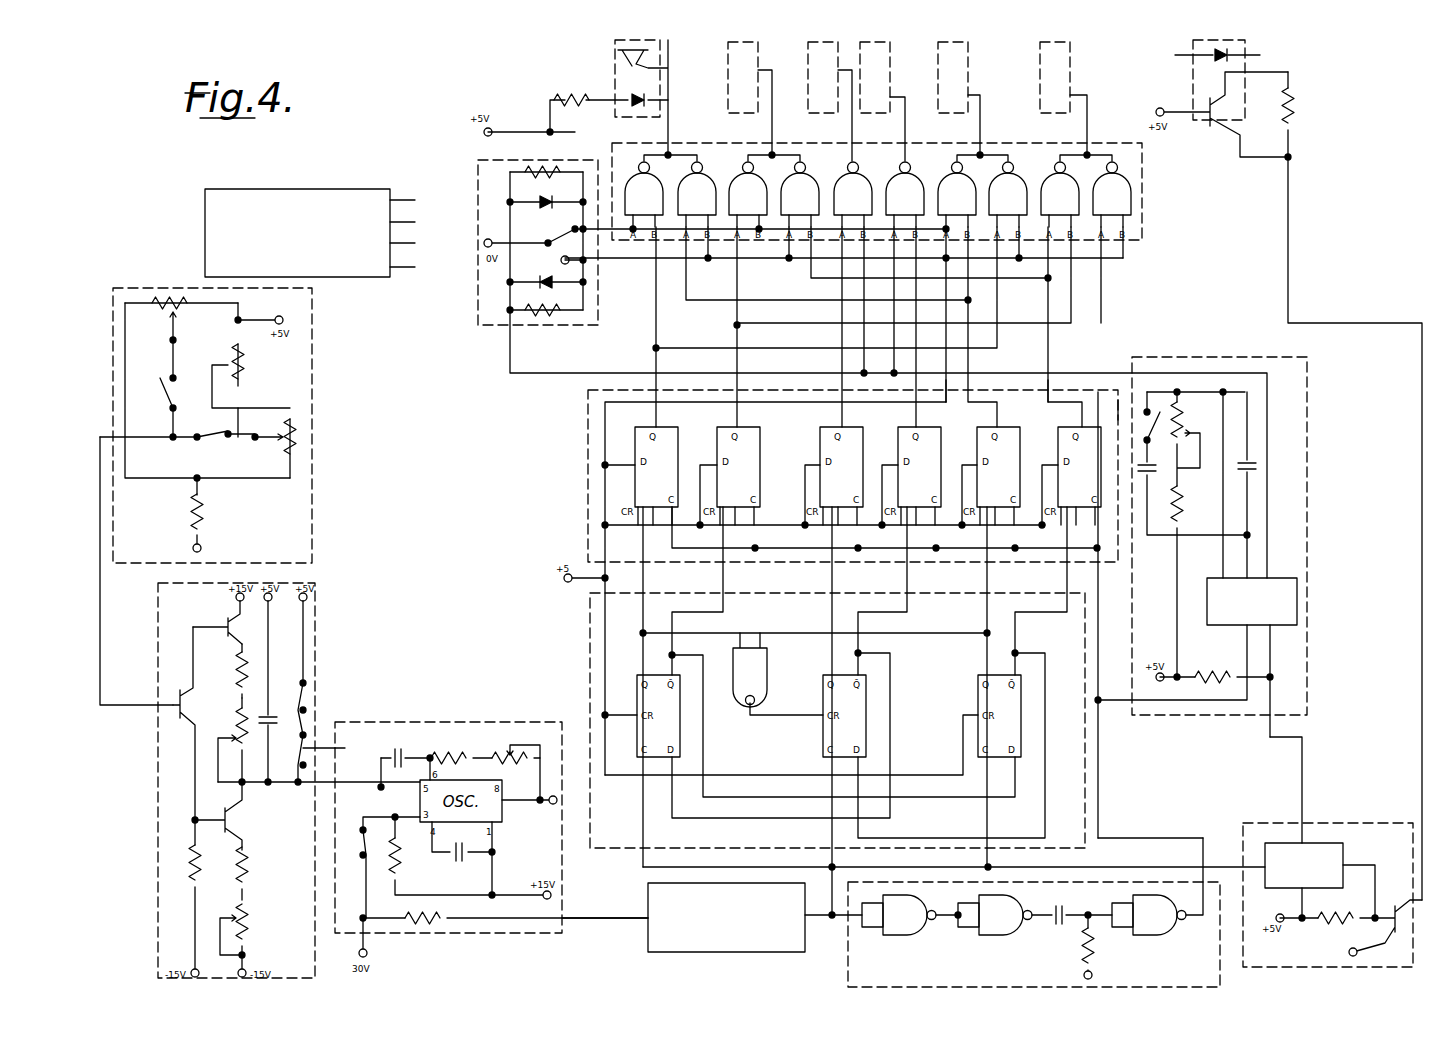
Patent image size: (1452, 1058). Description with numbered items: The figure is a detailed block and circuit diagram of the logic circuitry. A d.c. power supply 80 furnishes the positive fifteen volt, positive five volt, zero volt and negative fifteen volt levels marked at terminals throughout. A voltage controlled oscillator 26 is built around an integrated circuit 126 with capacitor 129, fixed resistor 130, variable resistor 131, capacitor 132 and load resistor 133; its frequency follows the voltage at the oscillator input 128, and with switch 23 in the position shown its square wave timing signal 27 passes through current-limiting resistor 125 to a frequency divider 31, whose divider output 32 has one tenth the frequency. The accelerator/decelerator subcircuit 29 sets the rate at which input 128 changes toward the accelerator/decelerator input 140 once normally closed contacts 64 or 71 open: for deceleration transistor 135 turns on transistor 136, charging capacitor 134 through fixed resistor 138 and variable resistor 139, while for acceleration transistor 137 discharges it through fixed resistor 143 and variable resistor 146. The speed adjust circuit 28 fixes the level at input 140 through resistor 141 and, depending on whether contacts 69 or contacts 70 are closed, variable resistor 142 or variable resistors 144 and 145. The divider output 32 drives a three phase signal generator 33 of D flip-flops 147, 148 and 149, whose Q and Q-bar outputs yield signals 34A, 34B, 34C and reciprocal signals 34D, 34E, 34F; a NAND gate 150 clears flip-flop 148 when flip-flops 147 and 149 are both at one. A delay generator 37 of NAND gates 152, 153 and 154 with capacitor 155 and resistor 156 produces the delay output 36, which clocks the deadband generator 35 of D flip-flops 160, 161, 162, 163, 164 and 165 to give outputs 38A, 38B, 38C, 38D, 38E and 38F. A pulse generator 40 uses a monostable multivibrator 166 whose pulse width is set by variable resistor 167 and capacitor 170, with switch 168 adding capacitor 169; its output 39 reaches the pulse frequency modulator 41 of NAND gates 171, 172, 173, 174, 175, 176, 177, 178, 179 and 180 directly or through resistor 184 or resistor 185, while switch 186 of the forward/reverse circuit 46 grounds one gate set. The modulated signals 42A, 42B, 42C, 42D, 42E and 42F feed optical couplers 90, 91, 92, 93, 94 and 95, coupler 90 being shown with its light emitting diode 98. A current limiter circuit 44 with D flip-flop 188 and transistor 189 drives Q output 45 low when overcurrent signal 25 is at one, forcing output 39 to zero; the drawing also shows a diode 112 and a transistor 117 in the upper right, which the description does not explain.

The d.c. power supply 80 is at (339, 184).
The speed adjust circuit 28 is at (158, 287).
The variable resistor 142 is at (173, 292).
The contacts 69 is at (165, 400).
The contacts 70 is at (215, 438).
The variable resistor 144 is at (243, 368).
The variable resistor 145 is at (298, 437).
The resistor 141 is at (207, 527).
The accelerator/decelerator input 140 is at (100, 665).
The accelerator/decelerator subcircuit 29 is at (315, 633).
The transistor 136 is at (227, 610).
The fixed resistor 138 is at (237, 672).
The capacitor 134 is at (242, 701).
The variable resistor 139 is at (238, 732).
The transistor 135 is at (175, 717).
The transistor 137 is at (238, 828).
The fixed resistor 143 is at (247, 872).
The variable resistor 146 is at (250, 935).
The normally closed contacts 71 is at (310, 692).
The normally closed contacts 64 is at (350, 748).
The voltage controlled oscillator 26 is at (490, 721).
The capacitor 132 is at (397, 737).
The oscillator input 128 is at (380, 798).
The fixed resistor 130 is at (443, 747).
The variable resistor 131 is at (518, 742).
The integrated circuit 126 is at (512, 822).
The switch 23 is at (345, 828).
The resistor 133 is at (397, 867).
The capacitor 129 is at (463, 858).
The resistor 125 is at (425, 928).
The timing signal 27 is at (605, 915).
The frequency divider 31 is at (635, 958).
The divider output 32 is at (828, 926).
The delay generator 37 is at (841, 981).
The NAND gate 152 is at (898, 935).
The NAND gate 153 is at (993, 935).
The capacitor 155 is at (1054, 933).
The resistor 156 is at (1095, 950).
The NAND gate 154 is at (1160, 940).
The delay generator output 36 is at (1167, 840).
The current limiter circuit 44 is at (1340, 822).
The D flip-flop 188 is at (1340, 846).
The transistor 189 is at (1408, 942).
The Q output 45 is at (1303, 763).
The overcurrent signal 25 is at (1296, 278).
The pulse generator 40 is at (1230, 358).
The pulse generator output 39 is at (1118, 360).
The switch 168 is at (1152, 422).
The variable resistor 167 is at (1179, 402).
The capacitor 169 is at (1180, 471).
The capacitor 170 is at (1256, 466).
The monostable multivibrator 166 is at (1298, 603).
The diode 112 is at (1253, 55).
The transistor 117 is at (1197, 100).
The forward/reverse circuit 46 is at (478, 308).
The resistor 185 is at (540, 160).
The switch 186 is at (538, 238).
The resistor 184 is at (524, 318).
The optical coupler 90 is at (615, 48).
The light emitting diode 98 is at (613, 91).
The optical coupler 91 is at (728, 50).
The optical coupler 92 is at (808, 48).
The optical coupler 93 is at (890, 50).
The optical coupler 94 is at (968, 50).
The optical coupler 95 is at (1070, 50).
The modulated signal 42A is at (670, 62).
The modulated signal 42B is at (772, 62).
The modulated signal 42C is at (850, 103).
The modulated signal 42D is at (905, 62).
The modulated signal 42E is at (985, 62).
The modulated signal 42F is at (1088, 62).
The pulse frequency modulator 41 is at (1142, 185).
The NAND gate 171 is at (644, 201).
The NAND gate 172 is at (697, 201).
The NAND gate 173 is at (748, 201).
The NAND gate 174 is at (800, 201).
The NAND gate 175 is at (853, 201).
The NAND gate 176 is at (905, 201).
The NAND gate 177 is at (957, 201).
The NAND gate 178 is at (1008, 201).
The NAND gate 179 is at (1060, 201).
The NAND gate 180 is at (1112, 201).
The deadband generator output 38A is at (654, 373).
The deadband generator output 38B is at (736, 373).
The deadband generator output 38C is at (842, 375).
The deadband generator output 38D is at (914, 383).
The deadband generator output 38E is at (988, 367).
The deadband generator output 38F is at (1080, 383).
The deadband generator 35 is at (585, 482).
The D flip-flop 160 is at (649, 476).
The D flip-flop 161 is at (731, 476).
The D flip-flop 162 is at (834, 476).
The D flip-flop 163 is at (912, 476).
The D flip-flop 164 is at (991, 476).
The D flip-flop 165 is at (1072, 476).
The three phase signal 34A is at (650, 583).
The three phase signal 34B is at (730, 585).
The three phase signal 34C is at (837, 583).
The reciprocal three phase signal 34D is at (913, 585).
The reciprocal three phase signal 34E is at (992, 581).
The reciprocal three phase signal 34F is at (1066, 591).
The three phase signal generator 33 is at (583, 668).
The D flip-flop 147 is at (680, 738).
The D flip-flop 148 is at (823, 697).
The D flip-flop 149 is at (978, 687).
The NAND gate 150 is at (763, 665).